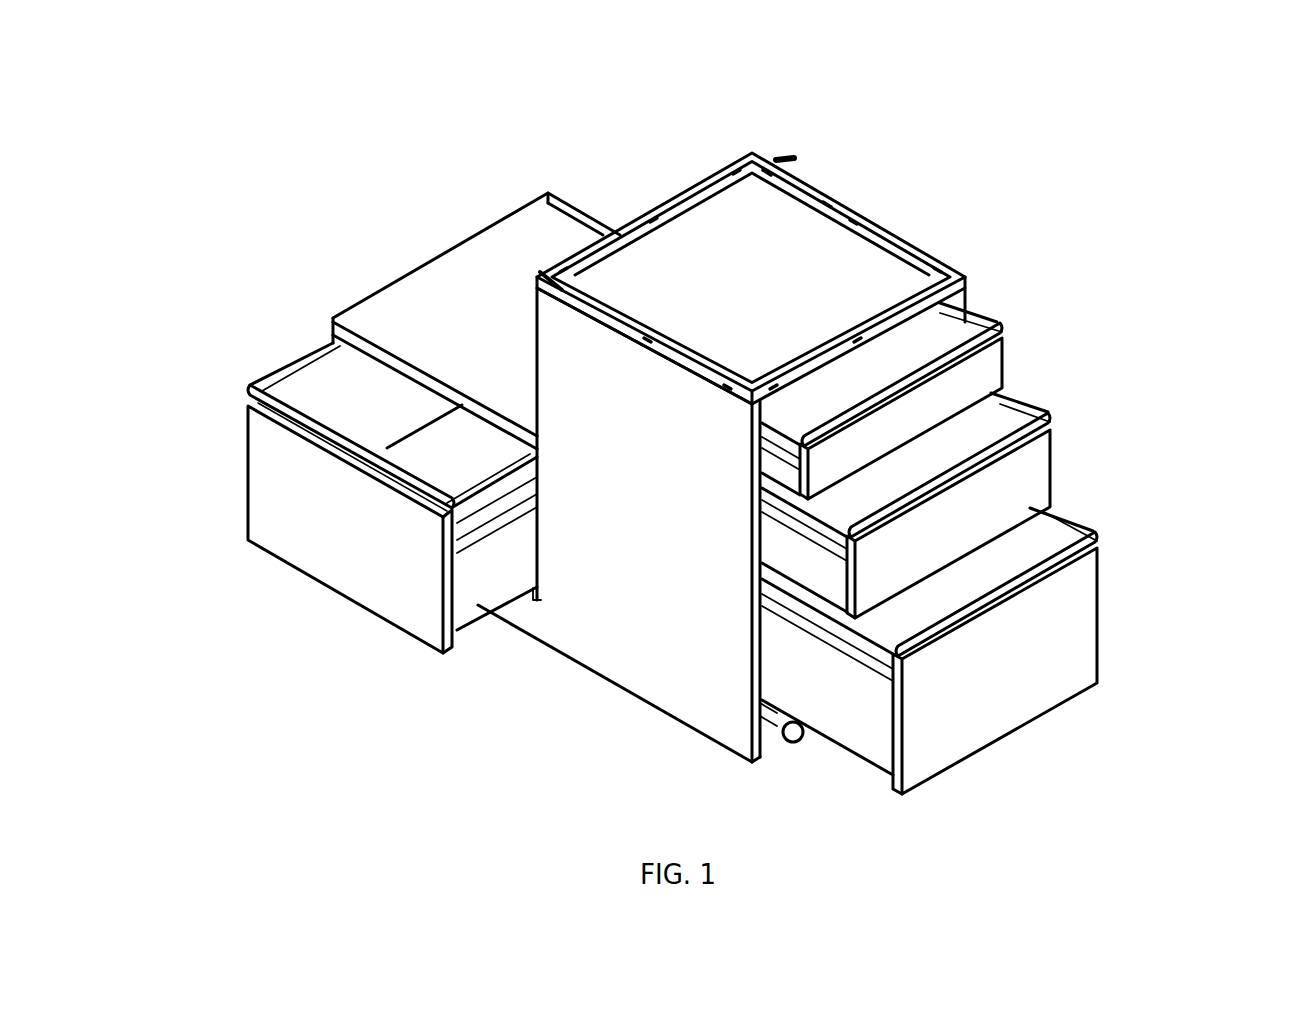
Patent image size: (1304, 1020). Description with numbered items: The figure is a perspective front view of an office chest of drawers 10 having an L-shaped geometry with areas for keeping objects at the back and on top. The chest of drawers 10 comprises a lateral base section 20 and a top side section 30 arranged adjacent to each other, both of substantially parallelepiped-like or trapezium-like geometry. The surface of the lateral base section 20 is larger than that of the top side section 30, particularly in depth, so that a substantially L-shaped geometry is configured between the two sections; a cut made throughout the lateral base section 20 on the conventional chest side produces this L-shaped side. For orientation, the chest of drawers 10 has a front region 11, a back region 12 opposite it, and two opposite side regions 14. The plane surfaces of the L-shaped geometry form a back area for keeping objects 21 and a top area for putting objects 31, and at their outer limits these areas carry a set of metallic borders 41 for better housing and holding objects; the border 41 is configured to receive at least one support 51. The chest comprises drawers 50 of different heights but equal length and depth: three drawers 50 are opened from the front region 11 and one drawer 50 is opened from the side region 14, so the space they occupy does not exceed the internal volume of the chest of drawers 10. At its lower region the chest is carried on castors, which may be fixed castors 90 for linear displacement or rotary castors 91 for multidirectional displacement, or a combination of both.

The office chest of drawers 10 is at (708, 446).
The front region 11 is at (1031, 727).
The back region 12 is at (553, 271).
The side region 14 is at (671, 683).
The lateral base section 20 is at (553, 271).
The back area for keeping objects 21 is at (522, 257).
The top side section 30 is at (804, 230).
The top area for putting objects 31 is at (753, 258).
The border 41 is at (877, 227).
The drawer 50 is at (278, 456).
The support 51 is at (796, 157).
The fixed castor 90 is at (634, 723).
The rotary castor 91 is at (786, 742).